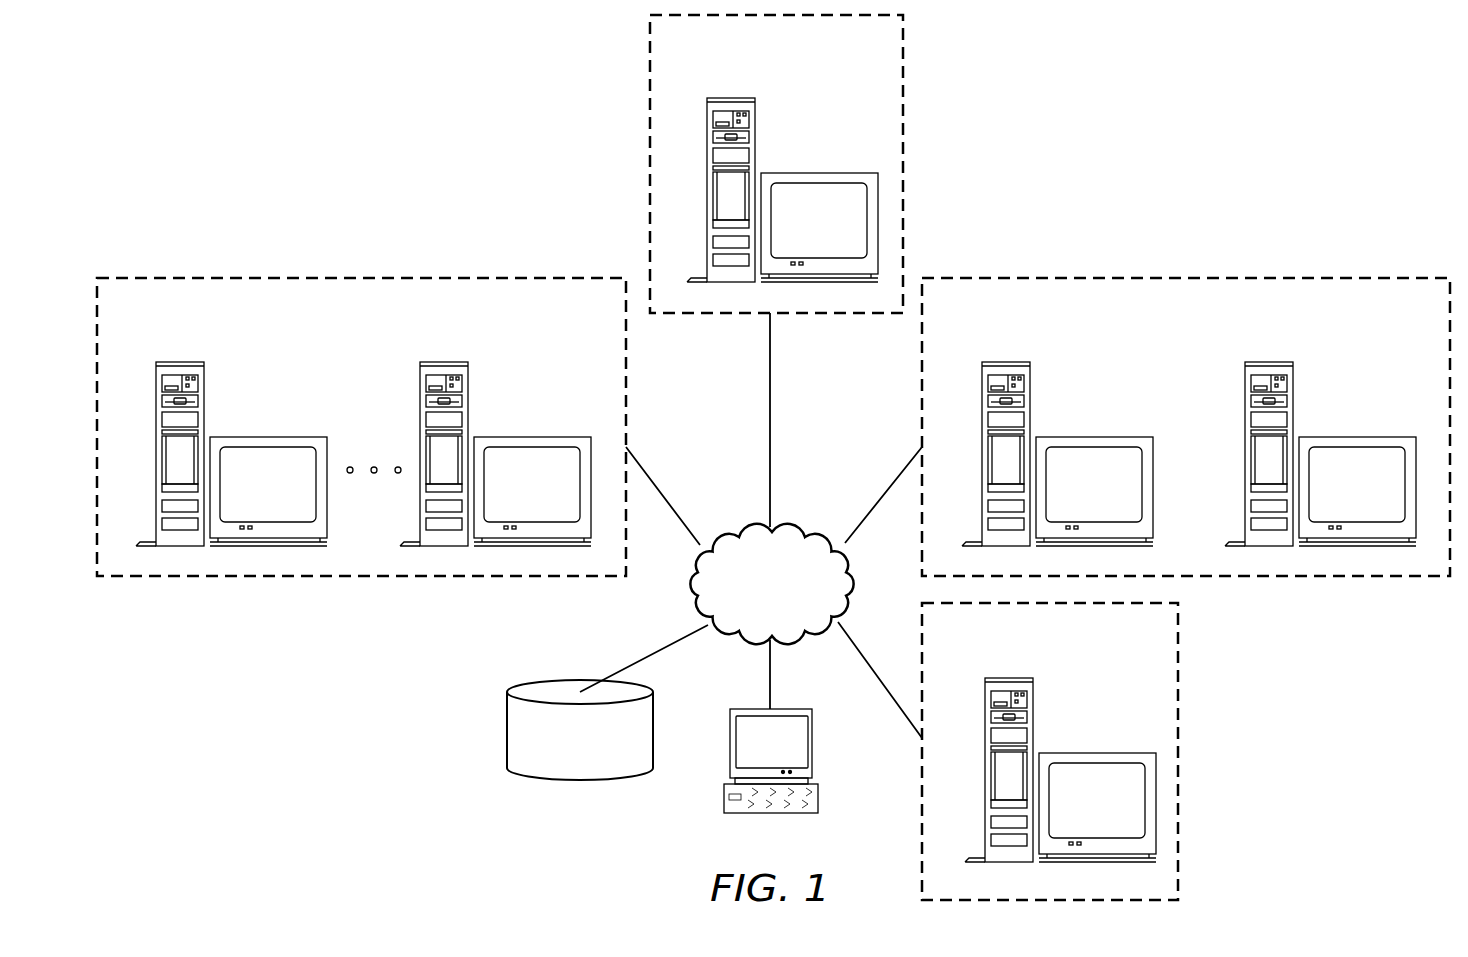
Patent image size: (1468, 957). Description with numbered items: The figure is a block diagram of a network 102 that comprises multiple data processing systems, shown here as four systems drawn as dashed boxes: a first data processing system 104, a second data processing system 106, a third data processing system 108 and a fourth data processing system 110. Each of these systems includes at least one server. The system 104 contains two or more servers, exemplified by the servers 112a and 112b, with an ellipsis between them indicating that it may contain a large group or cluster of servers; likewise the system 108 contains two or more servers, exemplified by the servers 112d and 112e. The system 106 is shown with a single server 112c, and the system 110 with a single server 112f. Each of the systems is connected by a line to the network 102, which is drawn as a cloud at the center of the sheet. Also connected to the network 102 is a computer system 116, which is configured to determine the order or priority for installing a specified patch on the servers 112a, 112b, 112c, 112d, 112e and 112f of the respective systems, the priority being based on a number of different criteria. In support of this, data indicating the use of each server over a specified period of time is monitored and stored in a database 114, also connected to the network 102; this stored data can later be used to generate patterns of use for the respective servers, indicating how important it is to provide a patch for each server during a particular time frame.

The network 102 is at (815, 536).
The data processing system 104 is at (303, 270).
The data processing system 106 is at (640, 152).
The data processing system 108 is at (1247, 270).
The data processing system 110 is at (1190, 740).
The server 112a is at (180, 362).
The server 112b is at (444, 362).
The server 112c is at (731, 98).
The server 112d is at (1006, 362).
The server 112e is at (1270, 362).
The server 112f is at (1009, 678).
The database 114 is at (568, 780).
The computer system 116 is at (812, 748).